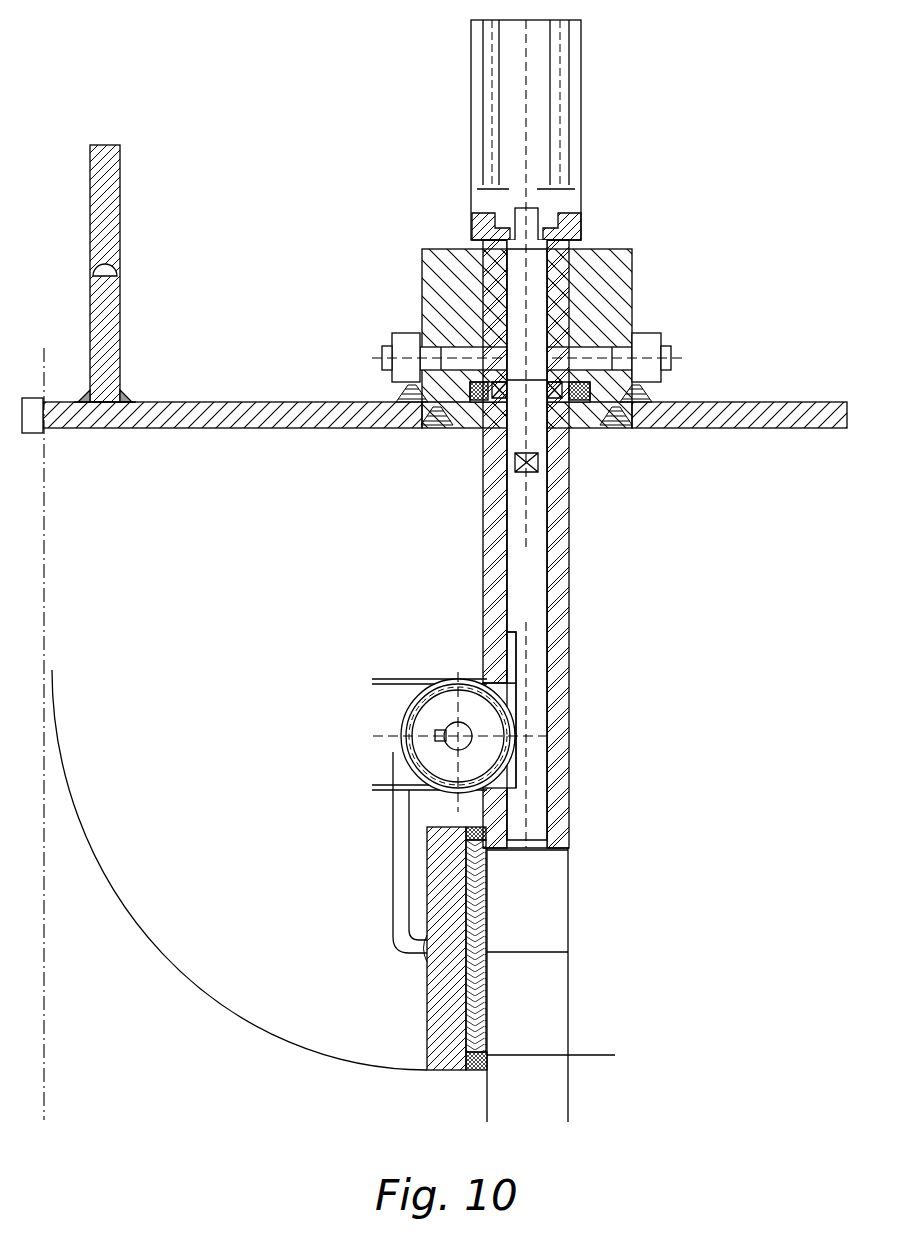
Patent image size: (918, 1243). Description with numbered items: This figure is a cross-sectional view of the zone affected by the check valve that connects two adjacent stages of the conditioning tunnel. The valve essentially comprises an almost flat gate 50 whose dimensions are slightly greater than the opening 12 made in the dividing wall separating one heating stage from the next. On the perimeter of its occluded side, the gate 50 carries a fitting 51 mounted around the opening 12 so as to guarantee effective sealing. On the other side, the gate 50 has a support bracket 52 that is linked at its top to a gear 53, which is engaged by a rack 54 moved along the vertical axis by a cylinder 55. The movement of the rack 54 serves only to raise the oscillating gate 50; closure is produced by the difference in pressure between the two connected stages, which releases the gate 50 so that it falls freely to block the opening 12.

The opening 12 is at (543, 991).
The gate 50 is at (427, 997).
The fitting 51 is at (472, 1073).
The support bracket 52 is at (393, 890).
The gear 53 is at (440, 735).
The rack 54 is at (525, 622).
The cylinder 55 is at (510, 167).